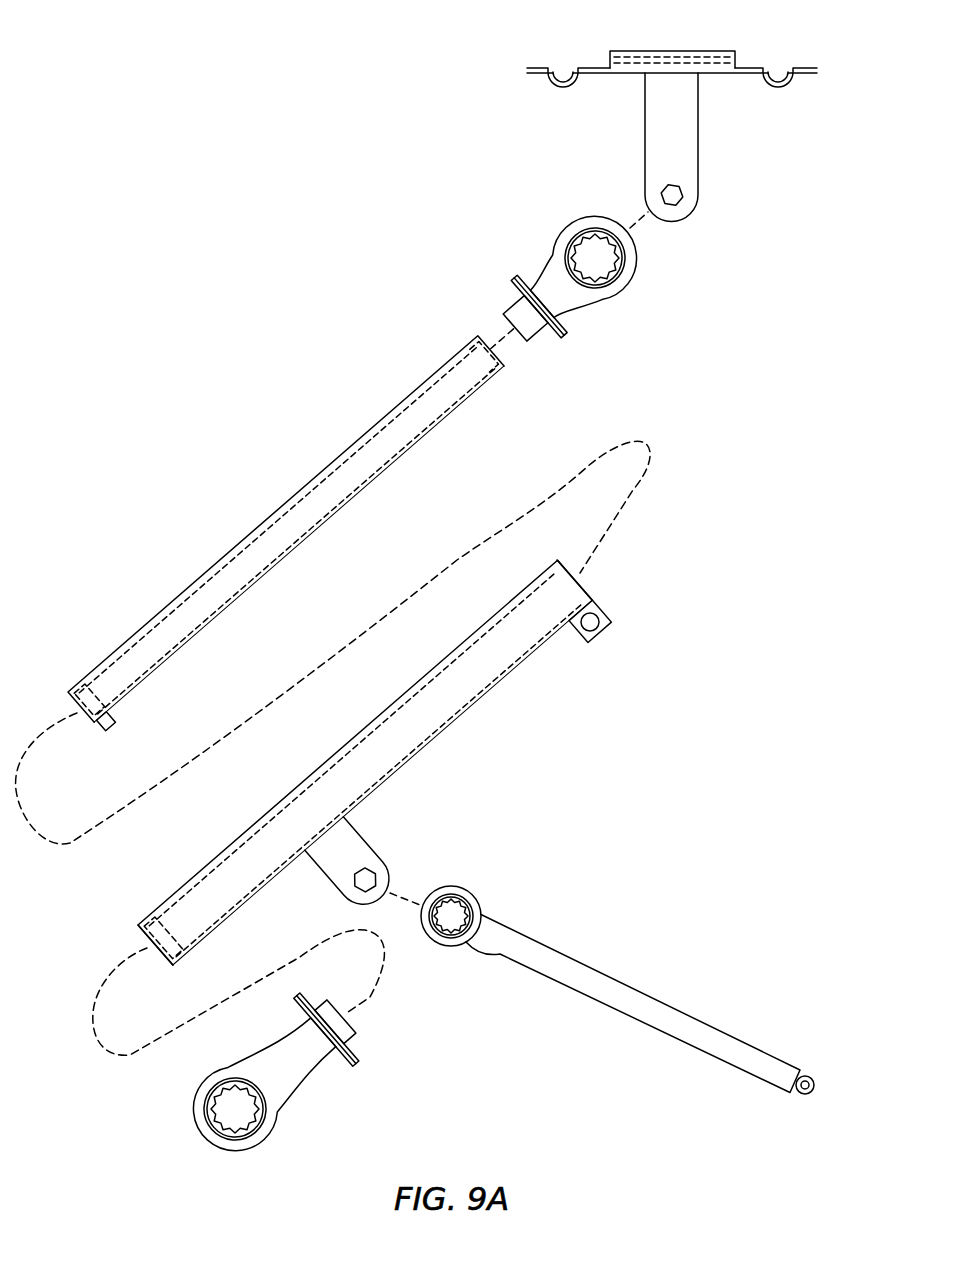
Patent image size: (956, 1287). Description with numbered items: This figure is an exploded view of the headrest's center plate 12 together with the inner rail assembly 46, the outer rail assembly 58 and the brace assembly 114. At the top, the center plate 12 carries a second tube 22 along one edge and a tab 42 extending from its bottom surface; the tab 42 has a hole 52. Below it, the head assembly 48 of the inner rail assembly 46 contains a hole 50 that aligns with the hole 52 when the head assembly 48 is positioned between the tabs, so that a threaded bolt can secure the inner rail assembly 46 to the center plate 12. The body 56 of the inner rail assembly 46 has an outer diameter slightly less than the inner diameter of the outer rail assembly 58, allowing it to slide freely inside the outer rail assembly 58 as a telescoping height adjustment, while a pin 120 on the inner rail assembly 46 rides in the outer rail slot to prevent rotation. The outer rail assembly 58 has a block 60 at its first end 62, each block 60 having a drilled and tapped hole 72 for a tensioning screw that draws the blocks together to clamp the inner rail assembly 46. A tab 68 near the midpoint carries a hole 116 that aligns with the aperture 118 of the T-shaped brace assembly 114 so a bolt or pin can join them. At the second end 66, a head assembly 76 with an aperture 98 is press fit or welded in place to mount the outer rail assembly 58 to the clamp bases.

The center plate 12 is at (580, 67).
The second tube 22 is at (617, 60).
The tab 42 is at (658, 147).
The hole 52 is at (655, 192).
The head assembly 48 is at (553, 271).
The hole 50 is at (605, 261).
The inner rail assembly 46 is at (423, 398).
The body 56 is at (340, 475).
The pin 120 is at (112, 727).
The outer rail assembly 58 is at (388, 758).
The first end 62 is at (582, 587).
The block 60 is at (610, 622).
The hole 72 is at (597, 626).
The second end 66 is at (158, 925).
The tab 68 is at (355, 850).
The hole 116 is at (376, 878).
The brace assembly 114 is at (543, 960).
The aperture 118 is at (455, 925).
The head assembly 76 is at (288, 1082).
The aperture 98 is at (252, 1114).